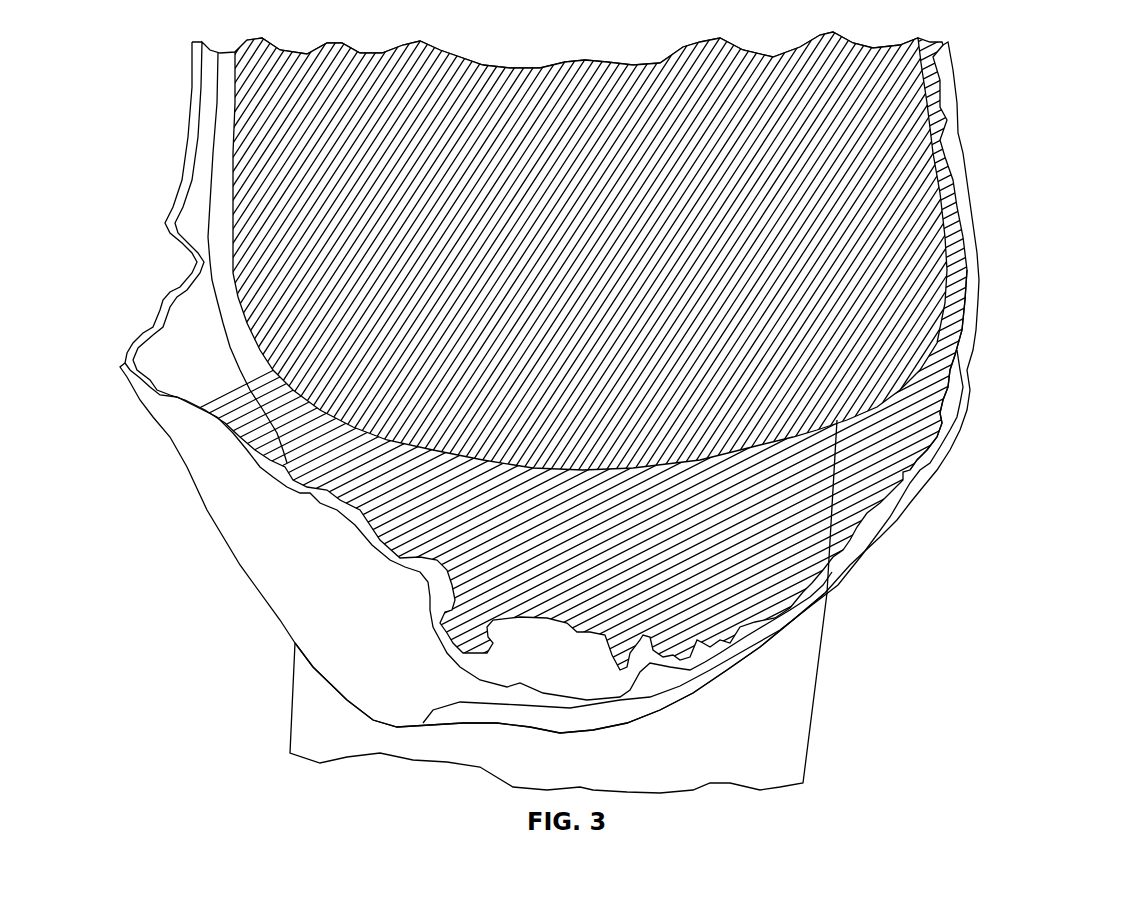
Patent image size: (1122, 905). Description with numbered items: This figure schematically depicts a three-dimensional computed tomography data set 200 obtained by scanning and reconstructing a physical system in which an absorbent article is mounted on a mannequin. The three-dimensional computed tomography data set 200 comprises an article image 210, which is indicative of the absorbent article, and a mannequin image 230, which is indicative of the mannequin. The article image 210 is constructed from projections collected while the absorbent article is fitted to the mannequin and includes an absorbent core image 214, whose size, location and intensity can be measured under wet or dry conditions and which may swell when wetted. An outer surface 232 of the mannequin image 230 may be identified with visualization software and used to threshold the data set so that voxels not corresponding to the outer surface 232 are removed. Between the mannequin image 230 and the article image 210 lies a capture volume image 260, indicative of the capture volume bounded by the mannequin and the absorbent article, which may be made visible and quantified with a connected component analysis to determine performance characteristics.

The three-dimensional computed tomography data set 200 is at (561, 452).
The article image 210 is at (990, 330).
The absorbent core image 214 is at (952, 400).
The capture volume image 260 is at (737, 497).
The mannequin image 230 is at (803, 668).
The outer surface of the mannequin image 232 is at (717, 739).